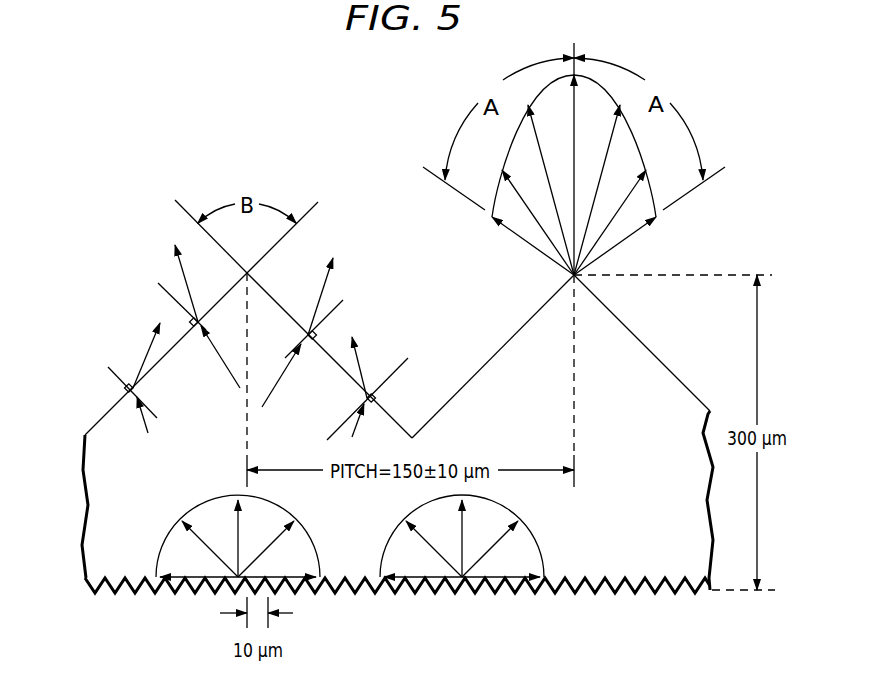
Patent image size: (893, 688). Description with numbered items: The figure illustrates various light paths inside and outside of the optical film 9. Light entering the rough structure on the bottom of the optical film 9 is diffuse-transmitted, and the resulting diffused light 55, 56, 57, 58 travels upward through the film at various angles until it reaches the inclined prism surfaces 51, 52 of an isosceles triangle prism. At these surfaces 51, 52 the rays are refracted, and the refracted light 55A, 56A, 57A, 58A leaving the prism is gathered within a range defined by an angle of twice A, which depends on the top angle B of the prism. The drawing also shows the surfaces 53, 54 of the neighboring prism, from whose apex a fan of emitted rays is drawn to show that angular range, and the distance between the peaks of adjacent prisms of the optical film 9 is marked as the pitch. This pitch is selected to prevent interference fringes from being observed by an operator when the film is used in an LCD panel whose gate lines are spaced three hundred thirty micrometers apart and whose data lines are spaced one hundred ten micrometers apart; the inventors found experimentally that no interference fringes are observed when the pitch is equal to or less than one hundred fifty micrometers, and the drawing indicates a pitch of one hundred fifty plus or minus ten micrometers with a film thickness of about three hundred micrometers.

The optical film 9 is at (107, 525).
The prism surface 51 is at (100, 422).
The prism surface 52 is at (267, 293).
The first facet of adjacent prism 53 is at (497, 352).
The second facet of adjacent prism 54 is at (648, 348).
The diffused light 55 is at (145, 422).
The refracted light 55A is at (147, 355).
The diffused light 56 is at (220, 358).
The refracted light 56A is at (183, 273).
The diffused light 57 is at (287, 375).
The refracted light 57A is at (326, 290).
The diffused light 58 is at (357, 423).
The refracted light 58A is at (362, 367).